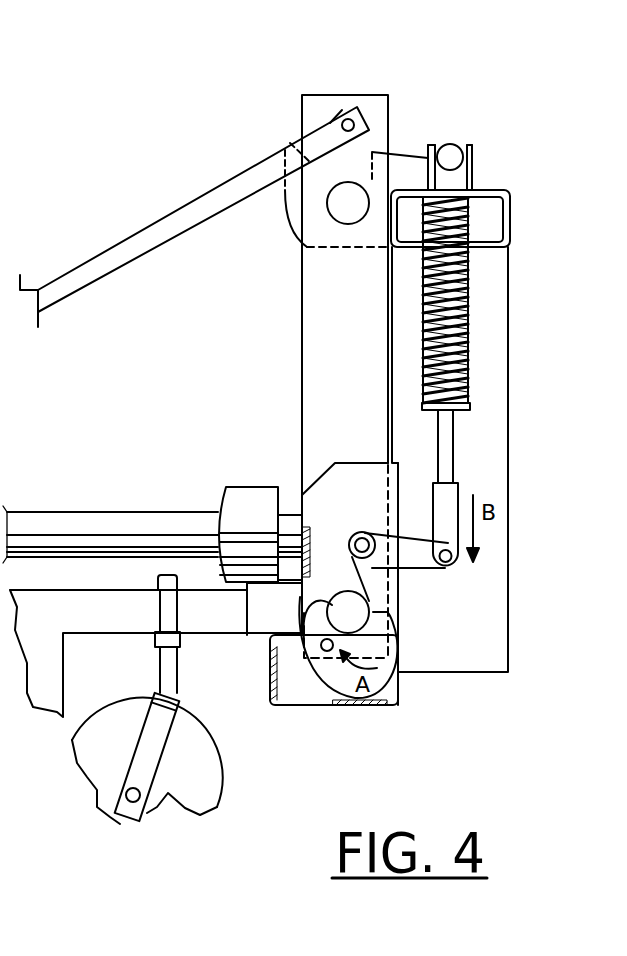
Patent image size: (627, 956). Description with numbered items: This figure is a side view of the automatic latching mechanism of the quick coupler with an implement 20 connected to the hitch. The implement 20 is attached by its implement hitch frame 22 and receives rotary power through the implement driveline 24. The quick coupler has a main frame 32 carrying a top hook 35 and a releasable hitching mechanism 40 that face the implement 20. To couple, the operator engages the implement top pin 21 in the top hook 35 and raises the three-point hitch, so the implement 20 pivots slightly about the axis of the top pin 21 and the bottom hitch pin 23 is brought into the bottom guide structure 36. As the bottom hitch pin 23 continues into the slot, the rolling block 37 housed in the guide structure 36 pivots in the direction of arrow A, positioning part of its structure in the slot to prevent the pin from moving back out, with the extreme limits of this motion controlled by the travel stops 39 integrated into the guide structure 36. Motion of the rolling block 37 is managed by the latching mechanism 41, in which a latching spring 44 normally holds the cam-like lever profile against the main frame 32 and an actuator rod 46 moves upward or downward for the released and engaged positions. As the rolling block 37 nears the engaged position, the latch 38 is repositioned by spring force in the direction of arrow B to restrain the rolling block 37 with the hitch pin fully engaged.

The implement 20 is at (145, 178).
The implement top pin 21 is at (350, 193).
The implement hitch frame 22 is at (312, 287).
The bottom hitch pin 23 is at (347, 612).
The implement driveline 24 is at (63, 525).
The main frame 32 is at (490, 270).
The top hook 35 is at (293, 207).
The bottom guide structure 36 is at (323, 510).
The rolling block 37 is at (338, 677).
The latch 38 is at (373, 587).
The travel stop 39 is at (338, 707).
The releasable hitching mechanism 40 is at (250, 716).
The latching mechanism 41 is at (525, 505).
The latching spring 44 is at (470, 343).
The actuator rod 46 is at (453, 447).